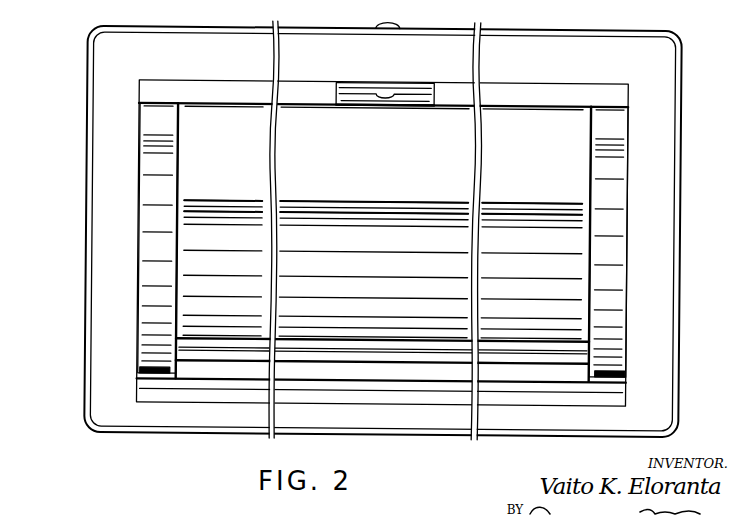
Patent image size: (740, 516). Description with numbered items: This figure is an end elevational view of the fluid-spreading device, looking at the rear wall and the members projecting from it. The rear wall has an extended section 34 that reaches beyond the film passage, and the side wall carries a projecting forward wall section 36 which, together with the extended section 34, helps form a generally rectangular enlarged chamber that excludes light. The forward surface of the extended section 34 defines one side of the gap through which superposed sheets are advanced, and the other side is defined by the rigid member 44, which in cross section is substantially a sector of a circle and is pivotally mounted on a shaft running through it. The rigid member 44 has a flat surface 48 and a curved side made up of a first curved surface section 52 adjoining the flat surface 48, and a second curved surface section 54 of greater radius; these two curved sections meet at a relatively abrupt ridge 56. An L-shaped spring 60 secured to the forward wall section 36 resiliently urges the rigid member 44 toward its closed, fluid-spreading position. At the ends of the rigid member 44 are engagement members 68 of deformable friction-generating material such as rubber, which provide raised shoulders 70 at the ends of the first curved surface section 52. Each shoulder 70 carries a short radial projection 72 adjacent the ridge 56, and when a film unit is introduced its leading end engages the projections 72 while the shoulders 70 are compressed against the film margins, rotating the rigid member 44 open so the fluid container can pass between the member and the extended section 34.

The extended section of rear wall 34 is at (213, 425).
The forward wall section 36 is at (506, 29).
The rigid member 44 is at (366, 308).
The flat surface 48 is at (369, 162).
The first curved surface section 52 is at (362, 273).
The second curved surface section 54 is at (506, 348).
The ridge 56 is at (418, 346).
The L-shaped spring 60 is at (436, 97).
The engagement members 68 is at (186, 156).
The raised shoulders 70 is at (168, 258).
The radial projection 72 is at (150, 364).